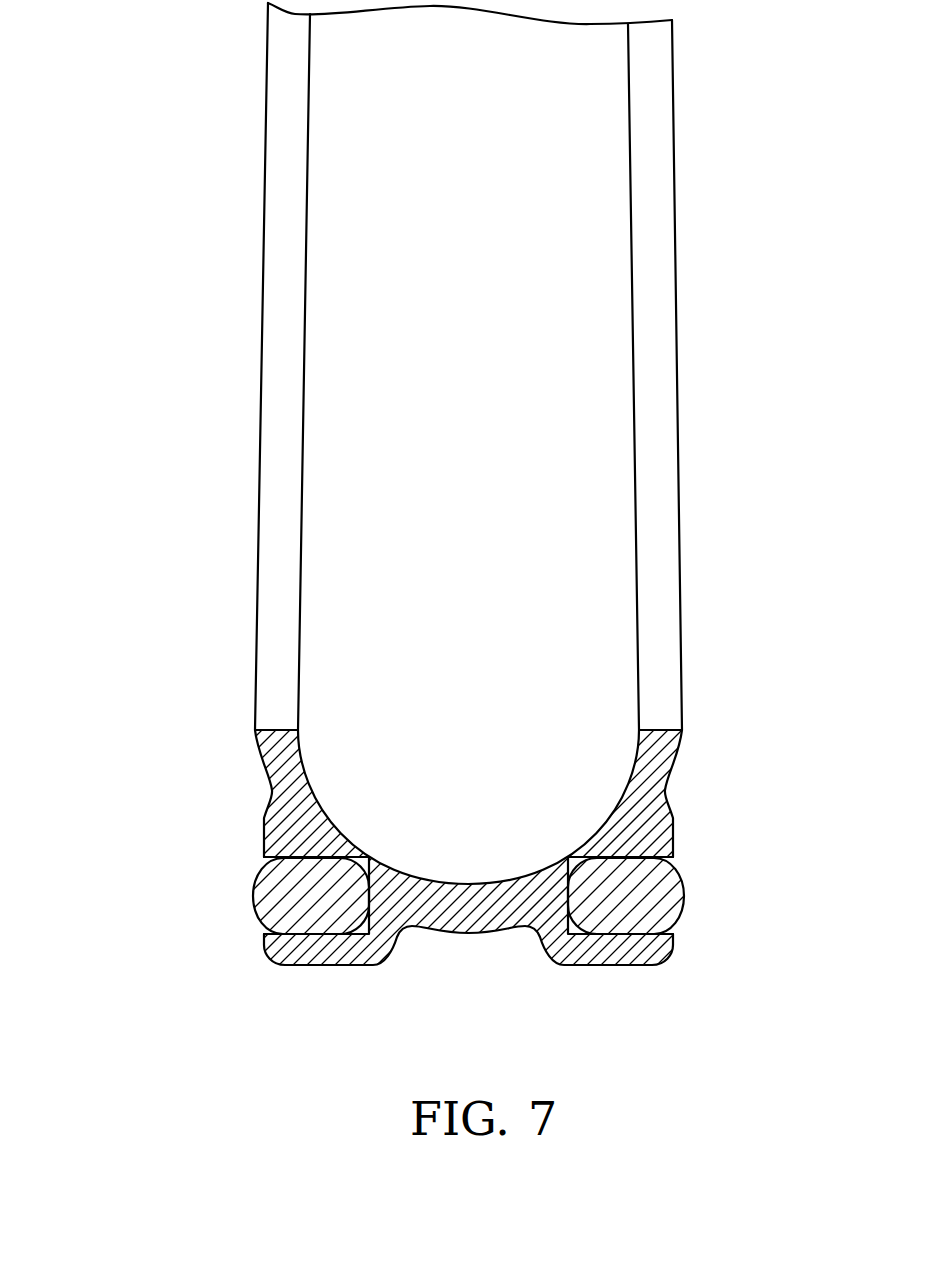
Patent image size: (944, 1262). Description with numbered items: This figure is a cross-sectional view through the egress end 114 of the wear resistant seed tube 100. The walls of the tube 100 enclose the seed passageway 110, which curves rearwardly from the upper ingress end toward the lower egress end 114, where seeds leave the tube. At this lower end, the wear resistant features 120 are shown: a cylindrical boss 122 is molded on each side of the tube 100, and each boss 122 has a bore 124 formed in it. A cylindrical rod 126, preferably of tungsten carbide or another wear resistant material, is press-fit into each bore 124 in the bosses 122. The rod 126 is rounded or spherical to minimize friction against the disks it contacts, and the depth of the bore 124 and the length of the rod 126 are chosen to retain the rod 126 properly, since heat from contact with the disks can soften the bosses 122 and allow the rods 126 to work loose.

The wear resistant seed tube 100 is at (282, 490).
The seed passageway 110 is at (565, 602).
The egress end 114 is at (602, 725).
The closed end section 120 is at (186, 850).
The cylindrical boss 122 is at (275, 962).
The bore 124 is at (267, 862).
The cylindrical rod 126 is at (267, 912).